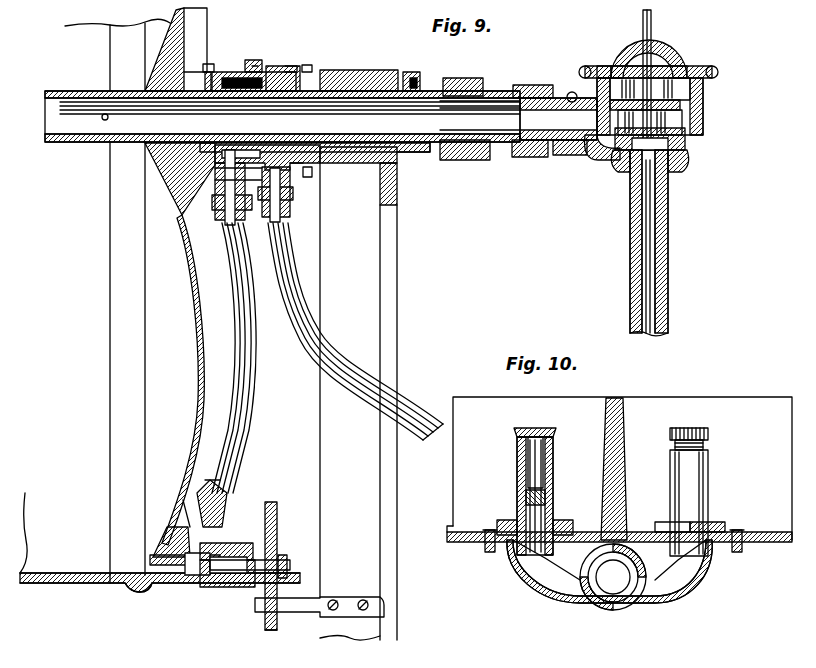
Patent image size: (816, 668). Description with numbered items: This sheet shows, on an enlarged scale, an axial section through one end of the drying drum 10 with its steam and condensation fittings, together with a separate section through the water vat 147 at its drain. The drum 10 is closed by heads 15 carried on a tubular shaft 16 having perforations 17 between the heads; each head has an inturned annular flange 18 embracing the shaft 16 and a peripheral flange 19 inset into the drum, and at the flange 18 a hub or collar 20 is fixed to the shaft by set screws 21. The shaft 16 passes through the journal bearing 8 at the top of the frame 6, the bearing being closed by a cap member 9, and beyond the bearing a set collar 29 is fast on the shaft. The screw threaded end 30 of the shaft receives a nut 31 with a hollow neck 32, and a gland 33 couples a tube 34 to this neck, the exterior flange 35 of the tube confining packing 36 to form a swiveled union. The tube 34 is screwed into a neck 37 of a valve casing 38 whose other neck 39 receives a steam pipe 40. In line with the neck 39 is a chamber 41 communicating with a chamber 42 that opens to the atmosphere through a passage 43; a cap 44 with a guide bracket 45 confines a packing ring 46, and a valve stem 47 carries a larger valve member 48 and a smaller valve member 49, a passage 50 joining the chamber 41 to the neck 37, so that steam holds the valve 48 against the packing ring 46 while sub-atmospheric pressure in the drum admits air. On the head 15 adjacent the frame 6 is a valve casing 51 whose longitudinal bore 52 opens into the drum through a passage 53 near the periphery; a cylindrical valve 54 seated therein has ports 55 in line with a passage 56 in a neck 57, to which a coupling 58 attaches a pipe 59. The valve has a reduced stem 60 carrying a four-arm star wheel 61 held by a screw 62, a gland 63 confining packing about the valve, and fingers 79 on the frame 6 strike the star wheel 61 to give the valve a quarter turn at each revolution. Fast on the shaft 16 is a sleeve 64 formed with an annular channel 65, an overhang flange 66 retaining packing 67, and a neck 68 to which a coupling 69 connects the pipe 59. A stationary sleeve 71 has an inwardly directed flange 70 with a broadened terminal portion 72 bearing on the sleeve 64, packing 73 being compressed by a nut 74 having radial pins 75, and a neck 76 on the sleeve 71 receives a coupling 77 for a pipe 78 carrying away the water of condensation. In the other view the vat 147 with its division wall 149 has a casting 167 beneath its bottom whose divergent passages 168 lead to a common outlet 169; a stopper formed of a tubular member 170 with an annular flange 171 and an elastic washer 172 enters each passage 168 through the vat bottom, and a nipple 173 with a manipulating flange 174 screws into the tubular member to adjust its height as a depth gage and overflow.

In FIG. 9, the frame 6 is at (397, 290).
In FIG. 9, the journal bearing 8 is at (362, 163).
In FIG. 9, the cap member 9 is at (368, 72).
In FIG. 9, the drum 10 is at (66, 584).
In FIG. 9, the heads 15 is at (199, 382).
In FIG. 9, the shaft 16 is at (52, 111).
In FIG. 9, the perforations 17 is at (104, 121).
In FIG. 9, the inturned annular flange 18 is at (124, 90).
In FIG. 9, the flange 19 is at (122, 573).
In FIG. 9, the hub or collar 20 is at (172, 160).
In FIG. 9, the set screws 21 is at (210, 63).
In FIG. 9, the set collar 29 is at (410, 165).
In FIG. 9, the screw threaded end 30 is at (449, 102).
In FIG. 9, the nut 31 is at (460, 160).
In FIG. 9, the hollow neck 32 is at (490, 80).
In FIG. 9, the gland 33 is at (531, 85).
In FIG. 9, the tube 34 is at (565, 155).
In FIG. 9, the exterior flange 35 is at (538, 157).
In FIG. 9, the packing 36 is at (520, 140).
In FIG. 9, the neck 37 is at (567, 86).
In FIG. 9, the valve casing 38 is at (703, 118).
In FIG. 9, the neck 39 is at (687, 165).
In FIG. 9, the pipe 40 is at (668, 268).
In FIG. 9, the chamber 41 is at (685, 130).
In FIG. 9, the chamber 42 is at (690, 88).
In FIG. 9, the passage 43 is at (670, 60).
In FIG. 9, the cap 44 is at (597, 68).
In FIG. 9, the guide bracket 45 is at (616, 50).
In FIG. 9, the packing ring 46 is at (712, 68).
In FIG. 9, the valve stem 47 is at (651, 16).
In FIG. 9, the valve member 48 is at (680, 104).
In FIG. 9, the valve member 49 is at (668, 146).
In FIG. 9, the passage 50 is at (608, 143).
In FIG. 9, the valve casing 51 is at (170, 567).
In FIG. 9, the longitudinal bore 52 is at (150, 592).
In FIG. 9, the passage 53 is at (156, 555).
In FIG. 9, the cylindrical valve 54 is at (212, 588).
In FIG. 9, the ports 55 is at (194, 576).
In FIG. 9, the passage 56 is at (220, 543).
In FIG. 9, the neck 57 is at (182, 500).
In FIG. 9, the coupling 58 is at (222, 510).
In FIG. 9, the pipe 59 is at (238, 440).
In FIG. 9, the reduced stem 60 is at (277, 532).
In FIG. 9, the four-arm star wheel 61 is at (271, 631).
In FIG. 9, the screw 62 is at (287, 566).
In FIG. 9, the gland 63 is at (233, 574).
In FIG. 9, the sleeve 64 is at (235, 110).
In FIG. 9, the annular channel 65 is at (230, 72).
In FIG. 9, the overhang flange 66 is at (253, 60).
In FIG. 9, the packing 67 is at (258, 66).
In FIG. 9, the neck 68 is at (218, 178).
In FIG. 9, the coupling 69 is at (214, 200).
In FIG. 9, the inwardly directed flange 70 is at (275, 145).
In FIG. 9, the sleeve 71 is at (300, 72).
In FIG. 9, the broadened terminal portion 72 is at (278, 72).
In FIG. 9, the packing 73 is at (290, 150).
In FIG. 9, the nut 74 is at (318, 72).
In FIG. 9, the radial pins 75 is at (312, 172).
In FIG. 9, the neck 76 is at (290, 170).
In FIG. 9, the coupling 77 is at (292, 200).
In FIG. 9, the pipe 78 is at (340, 328).
In FIG. 9, the fingers 79 is at (305, 612).
In FIG. 10, the vat 147 is at (752, 408).
In FIG. 10, the division wall 149 is at (630, 416).
In FIG. 10, the casting 167 is at (580, 588).
In FIG. 10, the divergent passages 168 is at (540, 570).
In FIG. 10, the common outlet 169 is at (622, 610).
In FIG. 10, the tubular member 170 is at (517, 468).
In FIG. 10, the annular flange 171 is at (568, 520).
In FIG. 10, the elastic washer 172 is at (490, 530).
In FIG. 10, the nipple 173 is at (553, 446).
In FIG. 10, the manipulating flange 174 is at (514, 432).